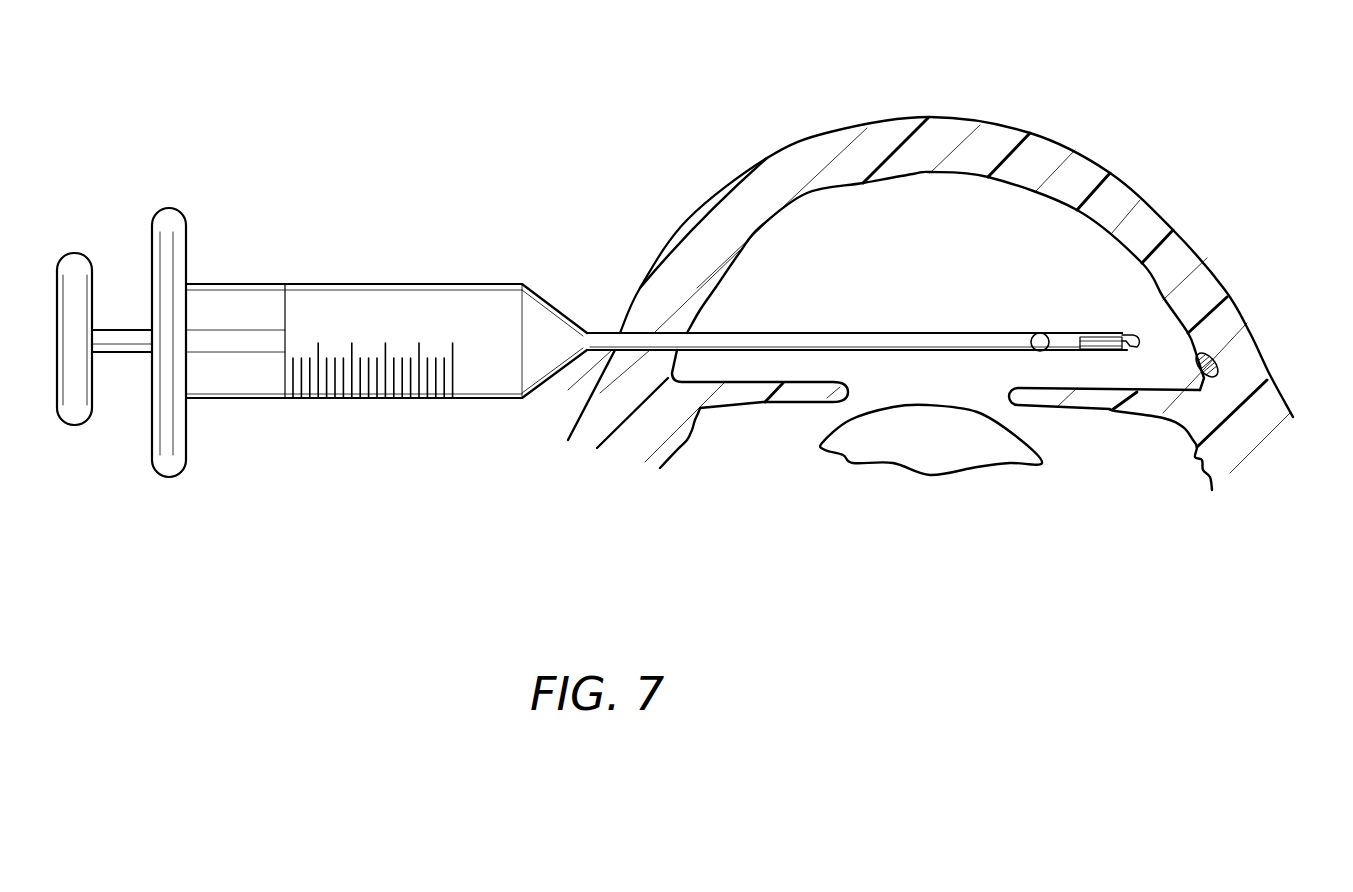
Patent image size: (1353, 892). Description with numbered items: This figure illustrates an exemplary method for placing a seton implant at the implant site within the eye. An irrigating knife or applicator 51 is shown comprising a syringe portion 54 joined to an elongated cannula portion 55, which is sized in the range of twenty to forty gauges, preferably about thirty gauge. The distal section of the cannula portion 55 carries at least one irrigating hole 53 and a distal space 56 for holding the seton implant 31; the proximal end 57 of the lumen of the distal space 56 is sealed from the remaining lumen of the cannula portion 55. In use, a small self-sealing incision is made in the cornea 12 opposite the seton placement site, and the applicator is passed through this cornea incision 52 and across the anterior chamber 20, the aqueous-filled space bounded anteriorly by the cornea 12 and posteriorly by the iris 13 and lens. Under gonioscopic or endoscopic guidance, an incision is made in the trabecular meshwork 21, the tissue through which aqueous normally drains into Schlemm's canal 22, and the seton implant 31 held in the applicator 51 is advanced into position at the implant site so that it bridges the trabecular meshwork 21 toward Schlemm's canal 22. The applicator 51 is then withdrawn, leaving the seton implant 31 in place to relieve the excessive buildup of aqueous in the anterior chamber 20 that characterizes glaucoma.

The cornea 12 is at (1117, 208).
The iris 13 is at (747, 403).
The anterior chamber 20 is at (840, 240).
The trabecular meshwork 21 is at (1195, 363).
The Schlemm's canal 22 is at (1213, 347).
The seton implant 31 is at (1103, 333).
The irrigating knife or applicator 51 is at (320, 276).
The cornea incision 52 is at (612, 322).
The irrigating hole 53 is at (1040, 352).
The syringe portion 54 is at (187, 418).
The cannula portion 55 is at (810, 352).
The distal space 56 is at (1090, 352).
The proximal end of the lumen of the distal space 57 is at (1077, 330).